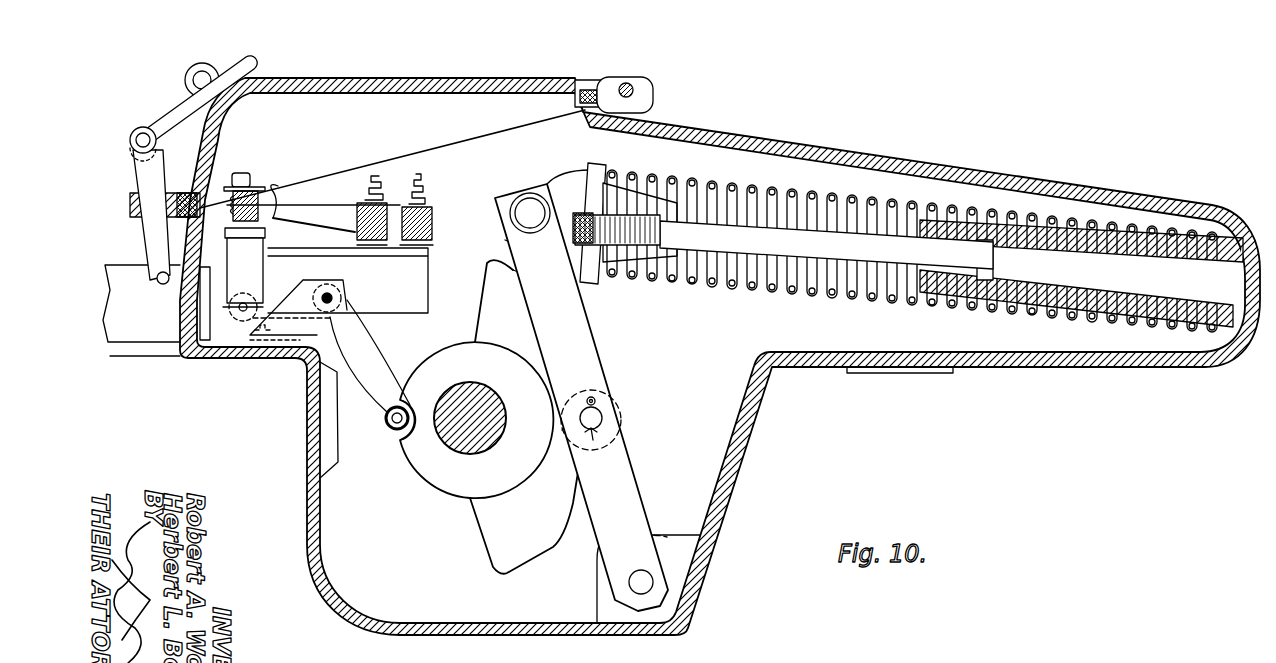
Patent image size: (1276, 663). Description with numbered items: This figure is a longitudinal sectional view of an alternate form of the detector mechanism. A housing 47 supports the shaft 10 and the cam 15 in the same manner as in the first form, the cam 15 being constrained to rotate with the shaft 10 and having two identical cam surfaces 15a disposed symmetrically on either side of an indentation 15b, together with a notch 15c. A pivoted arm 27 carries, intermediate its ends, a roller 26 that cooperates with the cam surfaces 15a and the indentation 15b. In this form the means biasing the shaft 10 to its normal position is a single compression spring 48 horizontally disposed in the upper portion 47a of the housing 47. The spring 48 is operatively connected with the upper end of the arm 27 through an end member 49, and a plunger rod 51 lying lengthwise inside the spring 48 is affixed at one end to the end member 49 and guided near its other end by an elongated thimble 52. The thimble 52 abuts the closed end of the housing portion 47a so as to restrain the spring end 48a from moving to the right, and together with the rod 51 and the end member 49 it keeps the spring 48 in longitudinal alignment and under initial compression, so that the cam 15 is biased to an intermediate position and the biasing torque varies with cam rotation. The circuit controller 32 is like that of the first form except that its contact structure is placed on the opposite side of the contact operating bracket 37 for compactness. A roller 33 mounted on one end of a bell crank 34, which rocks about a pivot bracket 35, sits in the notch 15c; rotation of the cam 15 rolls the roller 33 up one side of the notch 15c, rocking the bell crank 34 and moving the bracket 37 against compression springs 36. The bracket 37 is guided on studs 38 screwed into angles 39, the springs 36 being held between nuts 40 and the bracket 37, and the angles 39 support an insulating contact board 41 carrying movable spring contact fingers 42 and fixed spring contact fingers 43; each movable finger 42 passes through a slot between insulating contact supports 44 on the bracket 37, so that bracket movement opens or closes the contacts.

The shaft 10 is at (458, 430).
The cam 15 is at (458, 485).
The cam surfaces 15a is at (548, 548).
The indentation 15b is at (568, 445).
The notch 15c is at (402, 437).
The roller 26 is at (620, 413).
The arm 27 is at (630, 483).
The circuit controller 32 is at (328, 215).
The roller 33 is at (386, 432).
The bell crank 34 is at (362, 355).
The pivot bracket 35 is at (300, 348).
The compression springs 36 is at (232, 214).
The contact operating bracket 37 is at (262, 273).
The studs 38 is at (240, 175).
The angles 39 is at (418, 284).
The nuts 40 is at (252, 186).
The insulating contact board 41 is at (432, 226).
The movable spring contact fingers 42 is at (333, 220).
The fixed spring contact fingers 43 is at (312, 233).
The insulating contact supports 44 is at (268, 196).
The housing 47 is at (745, 437).
The upper portion of housing 47a is at (978, 366).
The compression spring 48 is at (762, 197).
The spring end 48a is at (1200, 332).
The end member 49 is at (600, 190).
The plunger rod 51 is at (752, 240).
The elongated thimble 52 is at (1108, 224).